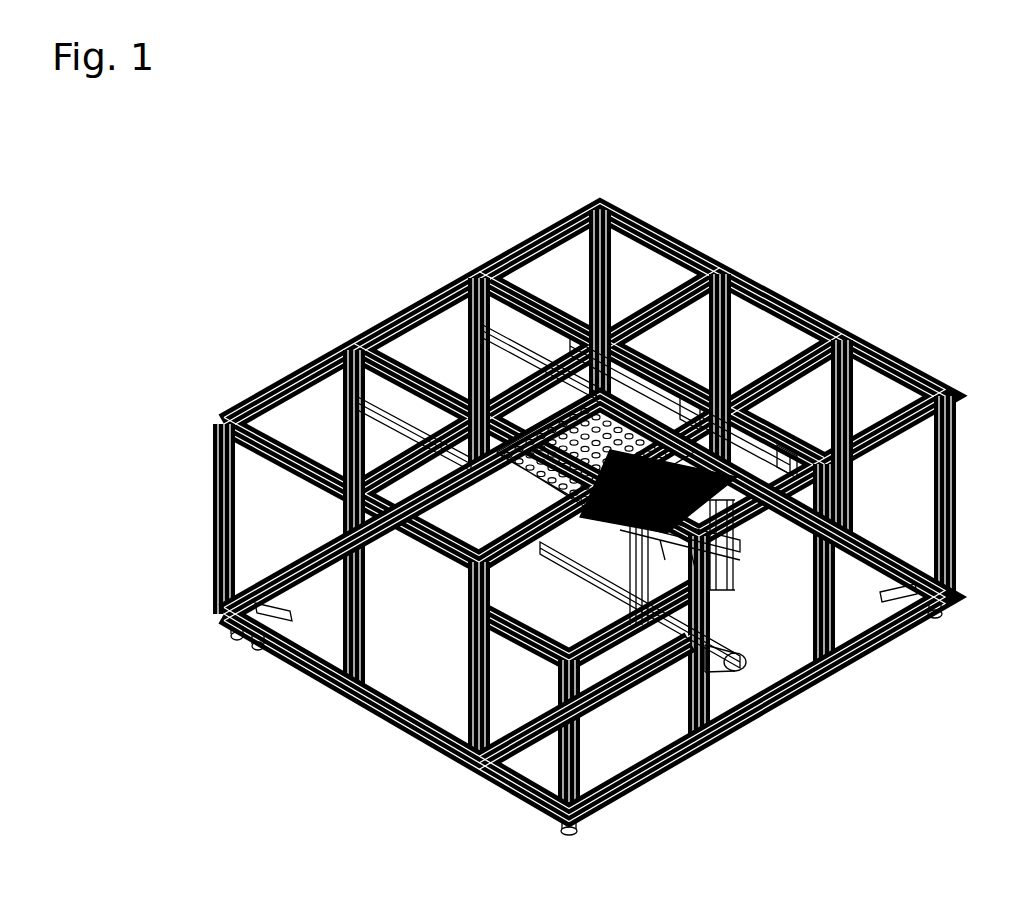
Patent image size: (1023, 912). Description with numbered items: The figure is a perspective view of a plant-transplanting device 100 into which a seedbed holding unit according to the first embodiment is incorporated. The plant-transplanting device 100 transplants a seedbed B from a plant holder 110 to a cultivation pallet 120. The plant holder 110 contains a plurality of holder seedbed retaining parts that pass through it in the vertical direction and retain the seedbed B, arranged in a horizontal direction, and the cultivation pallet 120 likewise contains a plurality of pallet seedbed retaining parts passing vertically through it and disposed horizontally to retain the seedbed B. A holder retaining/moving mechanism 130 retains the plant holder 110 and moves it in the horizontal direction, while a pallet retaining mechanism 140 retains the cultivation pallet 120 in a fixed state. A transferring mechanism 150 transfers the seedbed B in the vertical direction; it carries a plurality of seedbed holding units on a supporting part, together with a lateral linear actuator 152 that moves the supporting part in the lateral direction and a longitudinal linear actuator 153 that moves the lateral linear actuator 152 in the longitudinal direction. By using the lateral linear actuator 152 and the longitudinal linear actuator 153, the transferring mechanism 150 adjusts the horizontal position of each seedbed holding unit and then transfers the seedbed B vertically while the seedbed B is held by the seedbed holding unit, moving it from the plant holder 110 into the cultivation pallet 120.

The plant-transplanting device 100 is at (201, 174).
The plant holder 110 is at (346, 680).
The seedbed B is at (584, 615).
The cultivation pallet 120 is at (533, 372).
The holder retaining/moving mechanism 130 is at (707, 372).
The pallet retaining mechanism 140 is at (342, 503).
The transferring mechanism 150 is at (747, 573).
The lateral linear actuator 152 is at (815, 676).
The longitudinal linear actuator 153 is at (767, 697).